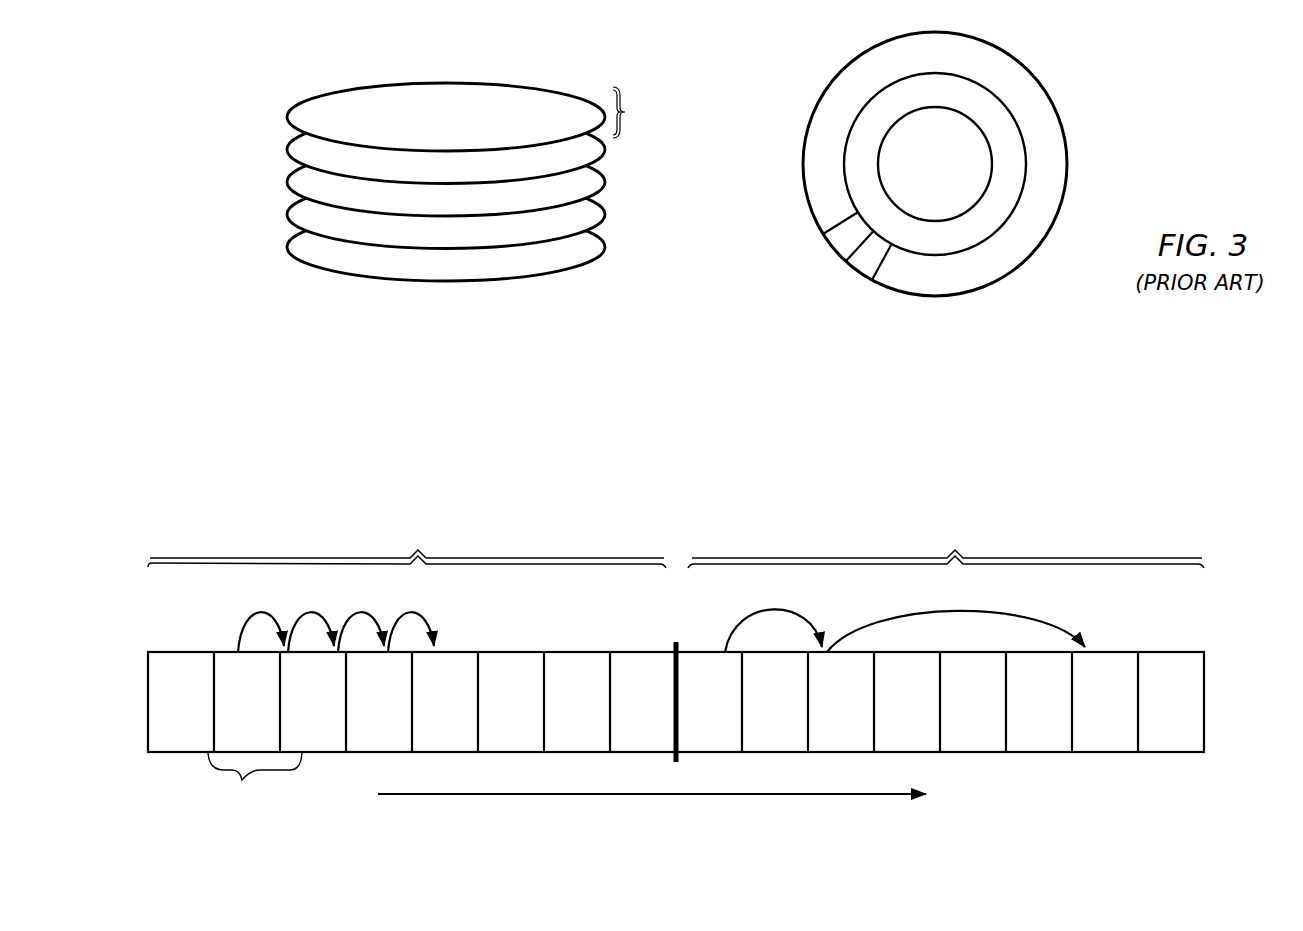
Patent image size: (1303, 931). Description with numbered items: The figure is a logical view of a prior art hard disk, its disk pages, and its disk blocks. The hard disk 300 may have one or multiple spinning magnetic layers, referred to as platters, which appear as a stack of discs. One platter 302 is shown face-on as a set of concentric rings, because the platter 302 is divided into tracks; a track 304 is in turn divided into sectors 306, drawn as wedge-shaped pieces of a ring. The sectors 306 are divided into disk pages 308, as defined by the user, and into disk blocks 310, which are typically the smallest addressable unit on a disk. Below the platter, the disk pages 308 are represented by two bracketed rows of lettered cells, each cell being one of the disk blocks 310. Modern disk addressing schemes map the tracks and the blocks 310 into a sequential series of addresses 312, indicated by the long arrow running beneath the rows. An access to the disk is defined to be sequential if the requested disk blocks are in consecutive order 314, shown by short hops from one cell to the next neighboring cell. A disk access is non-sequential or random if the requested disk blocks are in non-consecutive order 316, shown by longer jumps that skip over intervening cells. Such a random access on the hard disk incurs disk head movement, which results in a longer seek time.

The hard disk 300 is at (426, 60).
The platter 302 is at (644, 104).
The track 304 is at (980, 66).
The sectors 306 is at (719, 409).
The disk pages 308 is at (727, 541).
The disk blocks 310 is at (252, 811).
The sequential series of addresses 312 is at (660, 796).
The consecutive order 314 is at (321, 601).
The non-consecutive order 316 is at (815, 603).